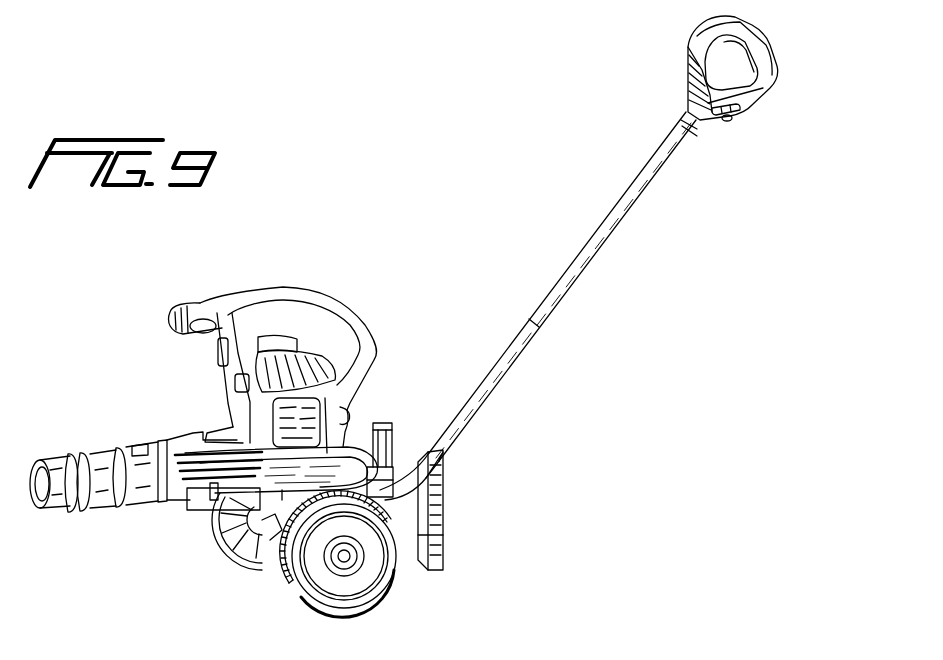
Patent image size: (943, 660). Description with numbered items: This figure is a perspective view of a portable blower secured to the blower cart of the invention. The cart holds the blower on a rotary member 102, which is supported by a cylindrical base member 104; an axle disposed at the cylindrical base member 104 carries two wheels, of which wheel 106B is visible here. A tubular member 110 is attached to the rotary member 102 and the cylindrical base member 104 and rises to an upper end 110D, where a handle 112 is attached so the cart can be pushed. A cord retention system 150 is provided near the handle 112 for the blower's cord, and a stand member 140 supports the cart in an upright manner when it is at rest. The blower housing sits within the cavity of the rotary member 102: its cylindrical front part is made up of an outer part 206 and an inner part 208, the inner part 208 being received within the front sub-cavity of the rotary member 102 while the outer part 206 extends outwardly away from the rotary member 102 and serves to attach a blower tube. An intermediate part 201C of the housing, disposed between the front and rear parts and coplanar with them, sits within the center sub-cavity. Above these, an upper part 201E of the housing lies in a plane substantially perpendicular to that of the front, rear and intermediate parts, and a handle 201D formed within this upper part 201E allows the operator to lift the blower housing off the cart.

The handle 112 is at (773, 33).
The cord retention system 150 is at (728, 118).
The upper end of tubular member 110D is at (690, 133).
The tubular member 110 is at (582, 292).
The handle 201D is at (342, 298).
The upper part of the housing 201E is at (347, 410).
The intermediate part 201C is at (380, 434).
The outer part 206 is at (180, 432).
The inner part 208 is at (212, 480).
The rotary member 102 is at (237, 545).
The cylindrical base member 104 is at (255, 548).
The wheel 106B is at (382, 607).
The stand member 140 is at (458, 507).